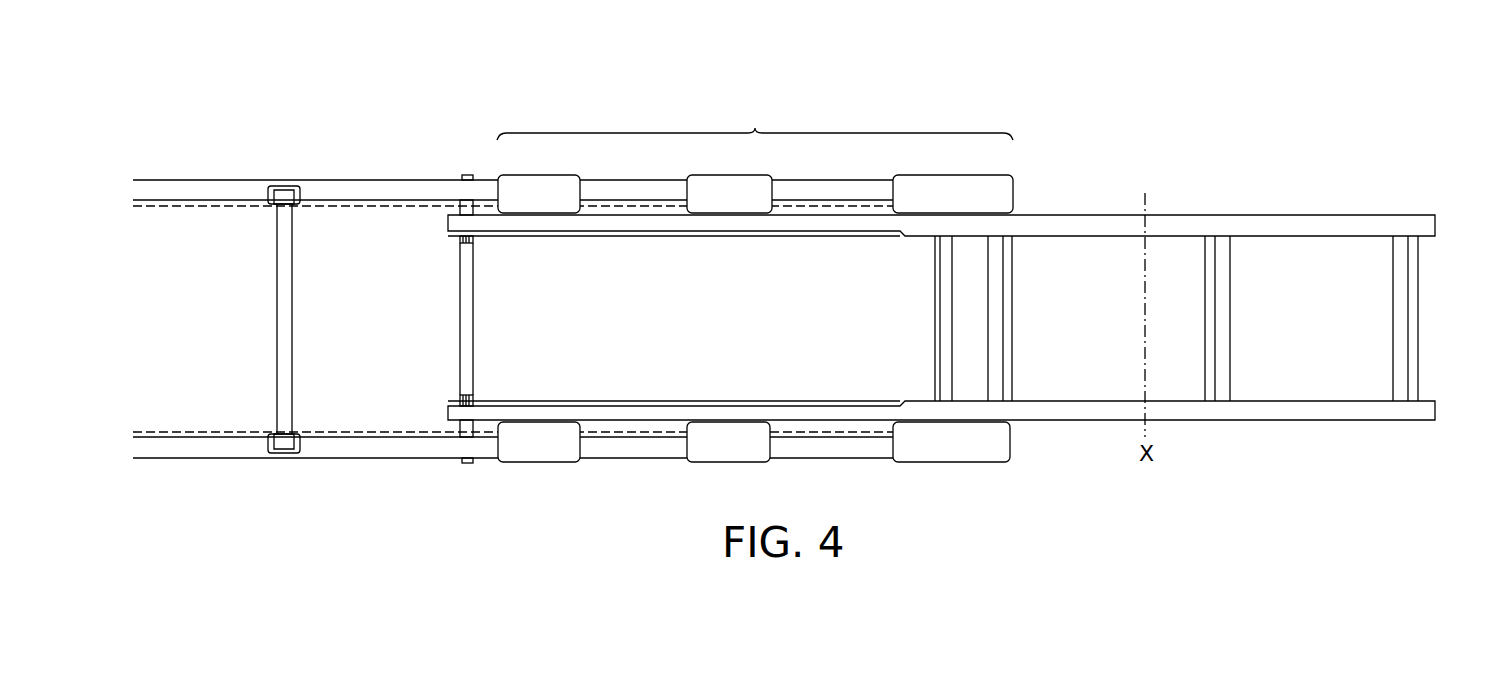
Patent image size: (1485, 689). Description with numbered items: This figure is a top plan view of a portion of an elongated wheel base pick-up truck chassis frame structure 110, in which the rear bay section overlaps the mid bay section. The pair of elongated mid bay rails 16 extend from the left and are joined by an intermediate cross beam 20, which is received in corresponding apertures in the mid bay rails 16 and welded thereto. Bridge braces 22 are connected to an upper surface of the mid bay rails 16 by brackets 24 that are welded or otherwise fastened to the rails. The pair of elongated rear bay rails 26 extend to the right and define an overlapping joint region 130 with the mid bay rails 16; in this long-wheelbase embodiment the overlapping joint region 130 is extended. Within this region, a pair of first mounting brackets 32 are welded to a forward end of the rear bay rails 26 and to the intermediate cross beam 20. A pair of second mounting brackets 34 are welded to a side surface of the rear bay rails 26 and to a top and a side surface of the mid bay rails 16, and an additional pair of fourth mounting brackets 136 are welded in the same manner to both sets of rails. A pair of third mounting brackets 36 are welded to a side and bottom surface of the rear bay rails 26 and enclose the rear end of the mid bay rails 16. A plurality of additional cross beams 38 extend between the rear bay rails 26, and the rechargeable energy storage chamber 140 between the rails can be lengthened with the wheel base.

The elongated mid bay rails 16 is at (227, 190).
The intermediate cross beam 20 is at (467, 328).
The bridge braces 22 is at (293, 320).
The brackets 24 is at (285, 185).
The elongated rear bay rails 26 is at (1268, 228).
The first mounting brackets 32 is at (458, 243).
The second mounting brackets 34 is at (520, 192).
The third mounting brackets 36 is at (1010, 190).
The additional cross beams 38 is at (996, 352).
The elongated wheel base pick-up truck chassis frame structure 110 is at (917, 98).
The overlapping joint region 130 is at (755, 123).
The fourth mounting brackets 136 is at (718, 190).
The rechargeable energy storage chamber 140 is at (777, 333).